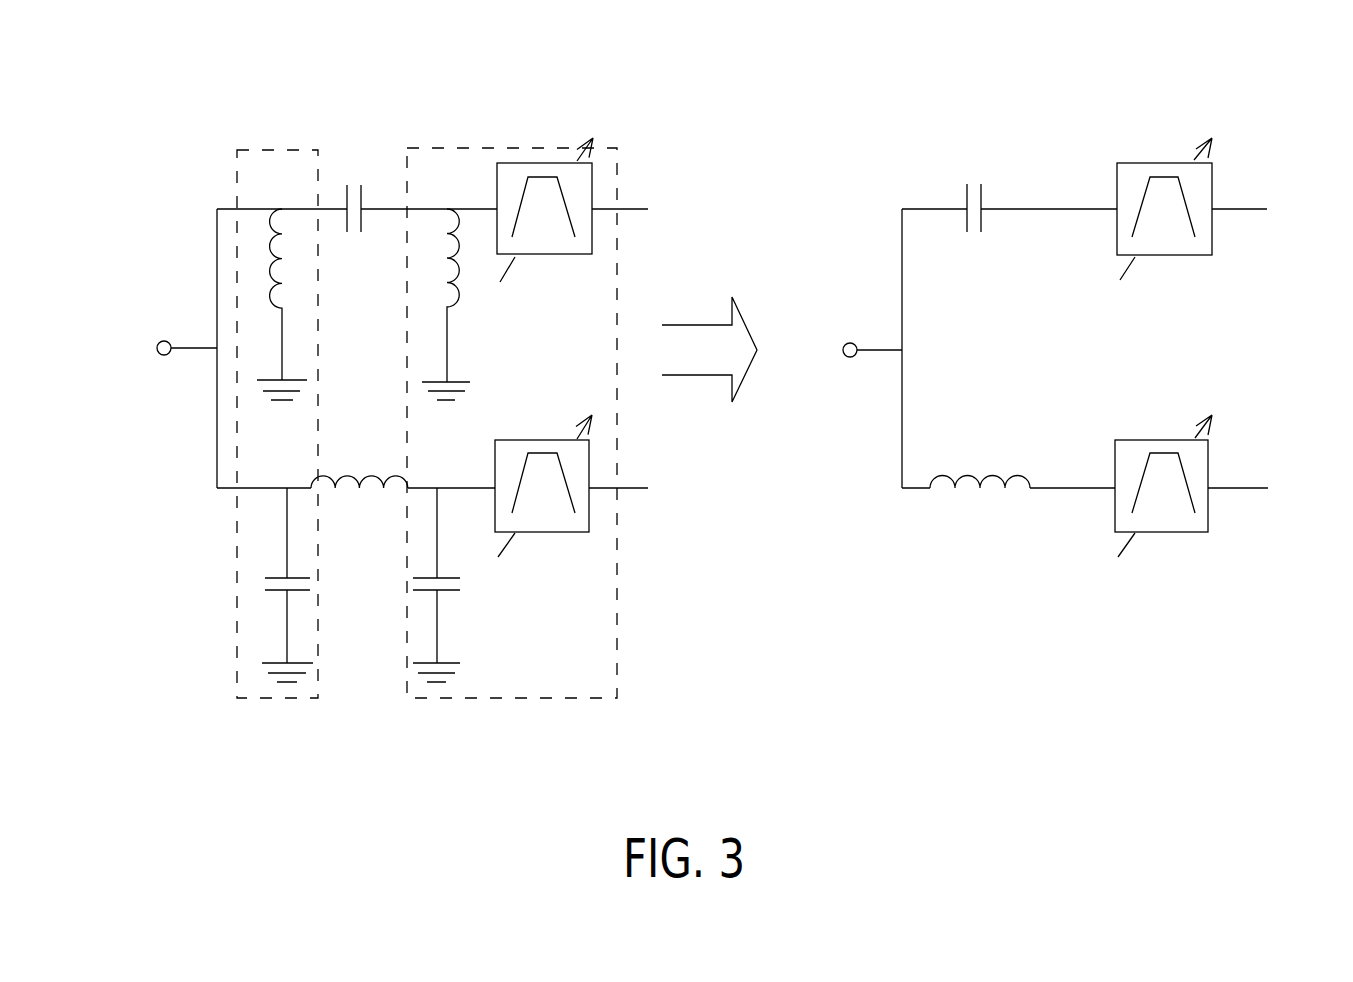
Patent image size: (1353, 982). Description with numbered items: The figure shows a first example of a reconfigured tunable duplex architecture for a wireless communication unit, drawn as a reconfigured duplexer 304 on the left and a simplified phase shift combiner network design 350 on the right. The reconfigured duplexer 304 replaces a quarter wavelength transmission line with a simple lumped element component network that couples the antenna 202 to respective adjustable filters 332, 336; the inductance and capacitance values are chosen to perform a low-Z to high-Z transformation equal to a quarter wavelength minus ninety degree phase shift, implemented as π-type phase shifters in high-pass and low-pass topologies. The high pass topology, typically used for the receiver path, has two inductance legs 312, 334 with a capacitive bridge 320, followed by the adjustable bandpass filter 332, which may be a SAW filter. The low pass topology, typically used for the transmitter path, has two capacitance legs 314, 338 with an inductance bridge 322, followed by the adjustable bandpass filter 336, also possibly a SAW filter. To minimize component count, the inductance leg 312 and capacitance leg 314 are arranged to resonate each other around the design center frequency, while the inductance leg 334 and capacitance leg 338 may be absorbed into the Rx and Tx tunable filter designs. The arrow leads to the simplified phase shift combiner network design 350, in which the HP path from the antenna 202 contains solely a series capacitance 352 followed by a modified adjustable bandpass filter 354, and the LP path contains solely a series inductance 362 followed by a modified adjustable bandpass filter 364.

The antenna 202 is at (193, 345).
The reconfigured duplexer 304 is at (745, 83).
The inductance leg (L1) 312 is at (275, 232).
The capacitance leg (C1) 314 is at (265, 580).
The capacitive bridge (C) 320 is at (366, 196).
The inductance bridge (L) 322 is at (380, 474).
The adjustable bandpass filter 332 is at (517, 163).
The inductance leg (L2) 334 is at (462, 300).
The adjustable bandpass filter 336 is at (543, 532).
The capacitance leg (C2) 338 is at (455, 582).
The simplified phase shift combiner network design 350 is at (1233, 90).
The series (HP) capacitance (C) 352 is at (987, 197).
The modified adjustable bandpass filter 354 is at (1138, 163).
The series (LP) inductance 362 is at (1000, 474).
The modified adjustable bandpass filter 364 is at (1163, 532).